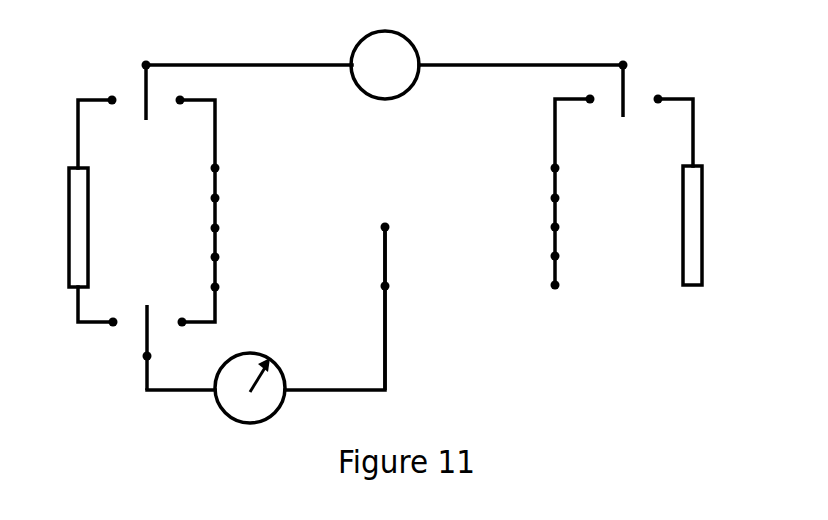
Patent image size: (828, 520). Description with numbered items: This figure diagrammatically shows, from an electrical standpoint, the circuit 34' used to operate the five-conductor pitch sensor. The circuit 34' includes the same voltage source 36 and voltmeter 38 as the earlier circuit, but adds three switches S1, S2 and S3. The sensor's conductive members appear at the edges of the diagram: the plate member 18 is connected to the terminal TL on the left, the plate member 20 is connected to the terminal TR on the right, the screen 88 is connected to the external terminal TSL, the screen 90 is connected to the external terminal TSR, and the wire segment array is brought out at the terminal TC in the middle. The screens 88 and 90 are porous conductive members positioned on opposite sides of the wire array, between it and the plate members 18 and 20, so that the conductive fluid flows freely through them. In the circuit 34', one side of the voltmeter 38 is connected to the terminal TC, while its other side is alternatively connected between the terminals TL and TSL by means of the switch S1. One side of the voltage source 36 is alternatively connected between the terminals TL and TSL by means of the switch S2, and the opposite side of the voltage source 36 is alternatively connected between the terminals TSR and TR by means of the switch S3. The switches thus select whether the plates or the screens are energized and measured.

The plate member 18 is at (77, 232).
The plate member 20 is at (688, 222).
The voltage source 36 is at (382, 88).
The voltmeter 38 is at (247, 368).
The electrically conductive member 88 is at (217, 226).
The electrically conductive member 90 is at (557, 228).
The circuit 34' is at (524, 362).
The switch S1 is at (145, 333).
The switch S2 is at (144, 110).
The switch S3 is at (625, 93).
The terminal TL is at (114, 104).
The external terminal TSL is at (178, 104).
The external terminal TSR is at (592, 103).
The terminal TR is at (656, 103).
The terminal TC is at (387, 284).